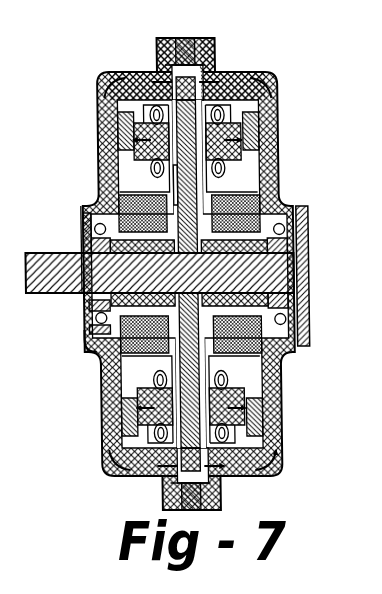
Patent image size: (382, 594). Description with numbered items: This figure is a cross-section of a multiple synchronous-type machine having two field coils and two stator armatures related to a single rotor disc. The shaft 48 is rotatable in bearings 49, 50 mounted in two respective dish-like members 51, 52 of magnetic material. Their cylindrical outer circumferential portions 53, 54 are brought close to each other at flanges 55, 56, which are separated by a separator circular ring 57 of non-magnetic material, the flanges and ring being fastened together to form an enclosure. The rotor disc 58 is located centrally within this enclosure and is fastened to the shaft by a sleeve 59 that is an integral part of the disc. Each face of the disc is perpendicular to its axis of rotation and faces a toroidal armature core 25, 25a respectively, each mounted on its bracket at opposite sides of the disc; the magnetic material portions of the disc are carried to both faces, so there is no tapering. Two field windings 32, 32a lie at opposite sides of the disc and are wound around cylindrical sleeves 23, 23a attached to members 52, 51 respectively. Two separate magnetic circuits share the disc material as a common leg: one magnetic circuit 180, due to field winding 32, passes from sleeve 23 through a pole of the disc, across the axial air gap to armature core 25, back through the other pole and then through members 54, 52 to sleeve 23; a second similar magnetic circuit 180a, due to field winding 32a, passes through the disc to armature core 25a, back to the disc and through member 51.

The cylindrical sleeve 23 is at (302, 302).
The cylindrical sleeve 23a is at (88, 249).
The toroidal armature core 25 is at (260, 153).
The toroidal armature core 25a is at (110, 152).
The field winding 32 is at (276, 364).
The field winding 32a is at (113, 366).
The shaft 48 is at (58, 294).
The bearing 49 is at (84, 326).
The bearing 50 is at (303, 227).
The dish-like member 51 is at (98, 119).
The dish-like member 52 is at (275, 119).
The cylindrical outer circumferential portion 53 is at (145, 72).
The cylindrical outer circumferential portion 54 is at (228, 72).
The flange 55 is at (160, 37).
The flange 56 is at (204, 37).
The separator circular ring 57 is at (191, 37).
The rotor disc 58 is at (203, 184).
The sleeve 59 is at (100, 303).
The magnetic circuit 180 is at (279, 80).
The magnetic circuit 180a is at (101, 80).